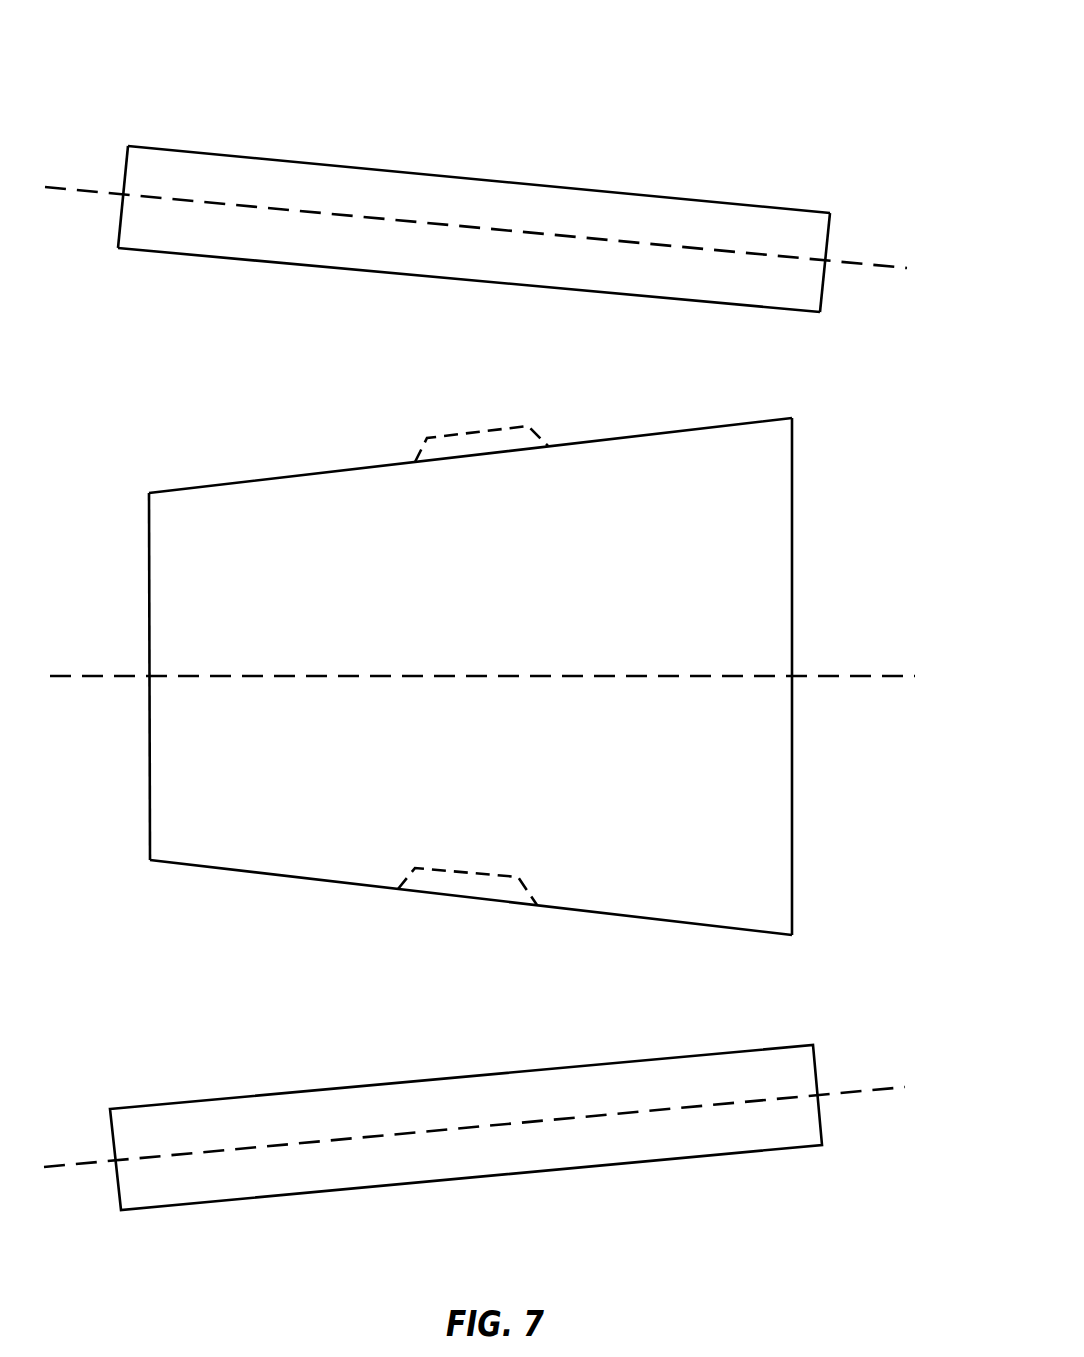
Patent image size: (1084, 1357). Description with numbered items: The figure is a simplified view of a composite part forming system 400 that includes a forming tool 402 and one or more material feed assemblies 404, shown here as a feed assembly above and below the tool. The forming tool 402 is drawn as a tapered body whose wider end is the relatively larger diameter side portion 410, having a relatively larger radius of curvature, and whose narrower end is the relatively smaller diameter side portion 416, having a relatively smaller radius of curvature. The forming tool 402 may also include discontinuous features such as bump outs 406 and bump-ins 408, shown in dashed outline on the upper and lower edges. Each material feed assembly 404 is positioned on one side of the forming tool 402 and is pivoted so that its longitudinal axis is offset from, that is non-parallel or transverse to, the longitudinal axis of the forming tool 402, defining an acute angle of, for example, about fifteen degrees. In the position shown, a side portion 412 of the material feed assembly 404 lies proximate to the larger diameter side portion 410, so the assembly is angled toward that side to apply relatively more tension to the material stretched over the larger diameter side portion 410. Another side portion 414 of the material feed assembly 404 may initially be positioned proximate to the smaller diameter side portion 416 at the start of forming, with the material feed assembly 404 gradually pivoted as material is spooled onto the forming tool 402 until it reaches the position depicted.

The composite part forming system 400 is at (120, 113).
The forming tool 402 is at (767, 643).
The material feed assembly 404 is at (482, 217).
The bump outs 406 is at (488, 430).
The bump-ins 408 is at (475, 873).
The relatively larger diameter side portion 410 is at (767, 502).
The side portion of the material feed assembly 412 is at (793, 230).
The another side portion of the material feed assembly 414 is at (178, 242).
The relatively smaller diameter side portion 416 is at (180, 807).